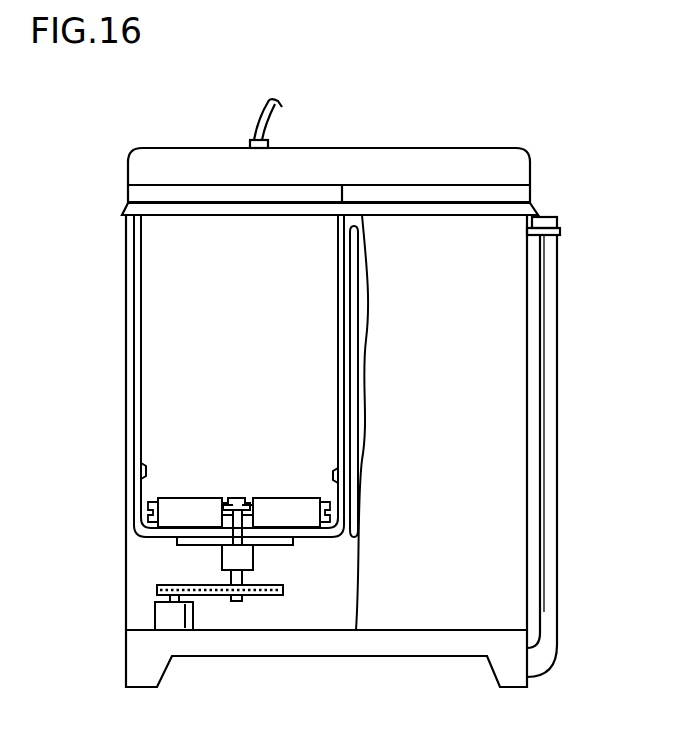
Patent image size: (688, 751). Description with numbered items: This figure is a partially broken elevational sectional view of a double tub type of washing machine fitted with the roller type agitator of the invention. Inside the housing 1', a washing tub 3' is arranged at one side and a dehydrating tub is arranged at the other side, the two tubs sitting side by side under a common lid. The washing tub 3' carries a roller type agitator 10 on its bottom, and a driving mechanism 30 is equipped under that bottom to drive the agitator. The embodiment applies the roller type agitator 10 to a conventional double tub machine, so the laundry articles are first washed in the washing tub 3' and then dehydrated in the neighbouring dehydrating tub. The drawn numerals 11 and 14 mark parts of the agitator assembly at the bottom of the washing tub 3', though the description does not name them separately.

The housing 1' is at (306, 451).
The washing tub 3' is at (214, 376).
The roller type agitator 10 is at (158, 493).
The mounting plate 11 is at (138, 530).
The heating block 14 is at (198, 507).
The driving mechanism 30 is at (264, 606).